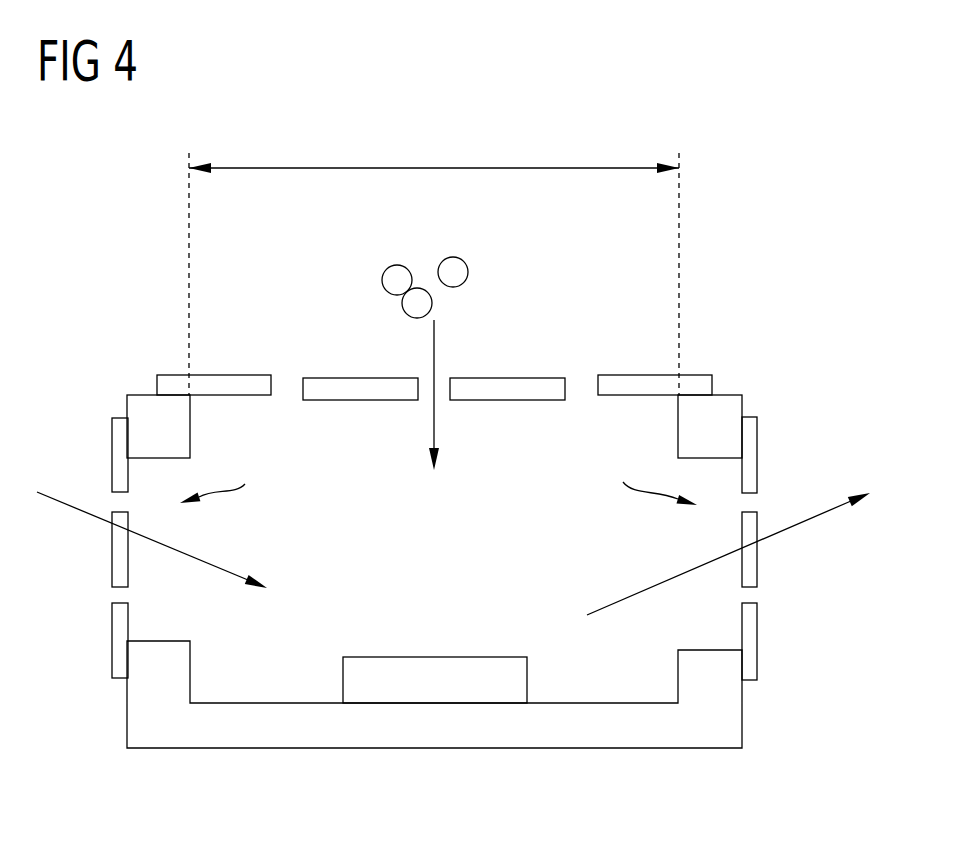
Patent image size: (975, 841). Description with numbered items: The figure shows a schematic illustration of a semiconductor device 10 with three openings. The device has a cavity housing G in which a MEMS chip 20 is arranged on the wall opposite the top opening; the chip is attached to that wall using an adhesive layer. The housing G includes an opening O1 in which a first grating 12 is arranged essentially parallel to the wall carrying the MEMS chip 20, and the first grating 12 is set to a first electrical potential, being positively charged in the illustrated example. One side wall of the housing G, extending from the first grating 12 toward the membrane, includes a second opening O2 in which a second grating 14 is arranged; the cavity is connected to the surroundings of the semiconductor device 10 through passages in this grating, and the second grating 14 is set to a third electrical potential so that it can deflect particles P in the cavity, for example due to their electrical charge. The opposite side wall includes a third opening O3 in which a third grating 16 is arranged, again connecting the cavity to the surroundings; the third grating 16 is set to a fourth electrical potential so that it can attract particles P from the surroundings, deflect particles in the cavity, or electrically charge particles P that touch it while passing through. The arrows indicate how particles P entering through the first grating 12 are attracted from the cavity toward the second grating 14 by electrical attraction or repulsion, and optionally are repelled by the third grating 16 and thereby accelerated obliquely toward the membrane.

The semiconductor device 10 is at (777, 139).
The first grating 12 is at (231, 386).
The second grating 14 is at (752, 630).
The third grating 16 is at (120, 640).
The MEMS chip 20 is at (434, 665).
The opening O1 is at (434, 260).
The second opening O2 is at (651, 474).
The third opening O3 is at (222, 473).
The particles P is at (417, 288).
The cavity housing G is at (723, 403).